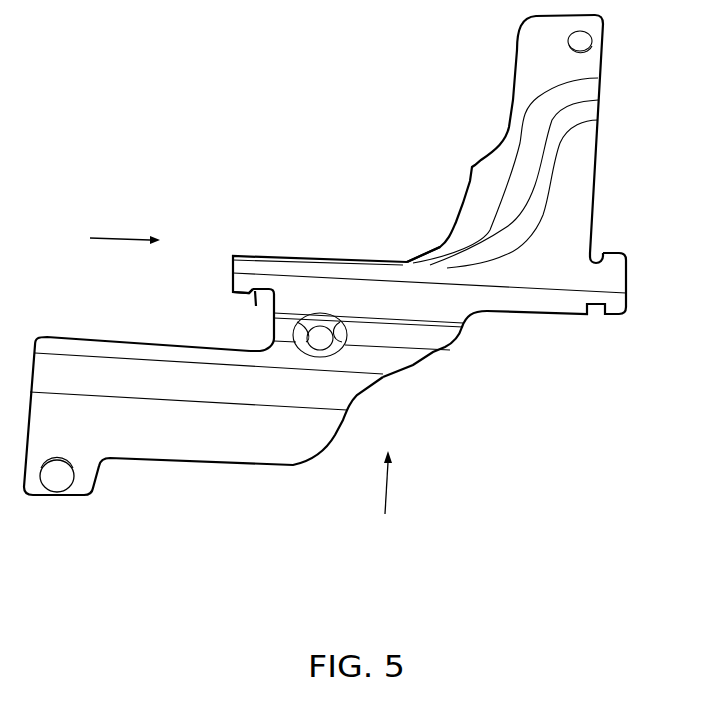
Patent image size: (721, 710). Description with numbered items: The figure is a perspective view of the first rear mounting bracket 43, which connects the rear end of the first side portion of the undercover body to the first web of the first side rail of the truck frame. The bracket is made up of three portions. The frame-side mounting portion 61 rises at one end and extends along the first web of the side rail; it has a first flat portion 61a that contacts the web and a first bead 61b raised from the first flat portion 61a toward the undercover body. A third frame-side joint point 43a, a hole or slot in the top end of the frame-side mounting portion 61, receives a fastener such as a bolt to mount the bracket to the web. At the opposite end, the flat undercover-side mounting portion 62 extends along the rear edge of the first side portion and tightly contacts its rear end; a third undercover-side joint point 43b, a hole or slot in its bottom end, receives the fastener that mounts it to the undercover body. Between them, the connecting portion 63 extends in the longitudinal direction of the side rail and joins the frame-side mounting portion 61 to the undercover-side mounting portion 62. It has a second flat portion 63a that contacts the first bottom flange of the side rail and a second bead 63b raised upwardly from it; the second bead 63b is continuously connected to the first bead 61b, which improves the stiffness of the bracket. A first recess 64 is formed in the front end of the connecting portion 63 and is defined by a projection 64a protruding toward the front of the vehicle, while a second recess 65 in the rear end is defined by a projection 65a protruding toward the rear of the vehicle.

The first rear mounting bracket 43 is at (261, 50).
The third frame-side joint point 43a is at (593, 43).
The third undercover-side joint point 43b is at (57, 492).
The frame-side mounting portion 61 is at (445, 157).
The first flat portion 61a is at (524, 85).
The first bead 61b is at (597, 146).
The undercover-side mounting portion 62 is at (230, 456).
The connecting portion 63 is at (314, 246).
The second flat portion 63a is at (442, 248).
The second bead 63b is at (485, 278).
The first recess 64 is at (601, 256).
The projection 64a is at (628, 278).
The second recess 65 is at (257, 307).
The projection 65a is at (242, 293).